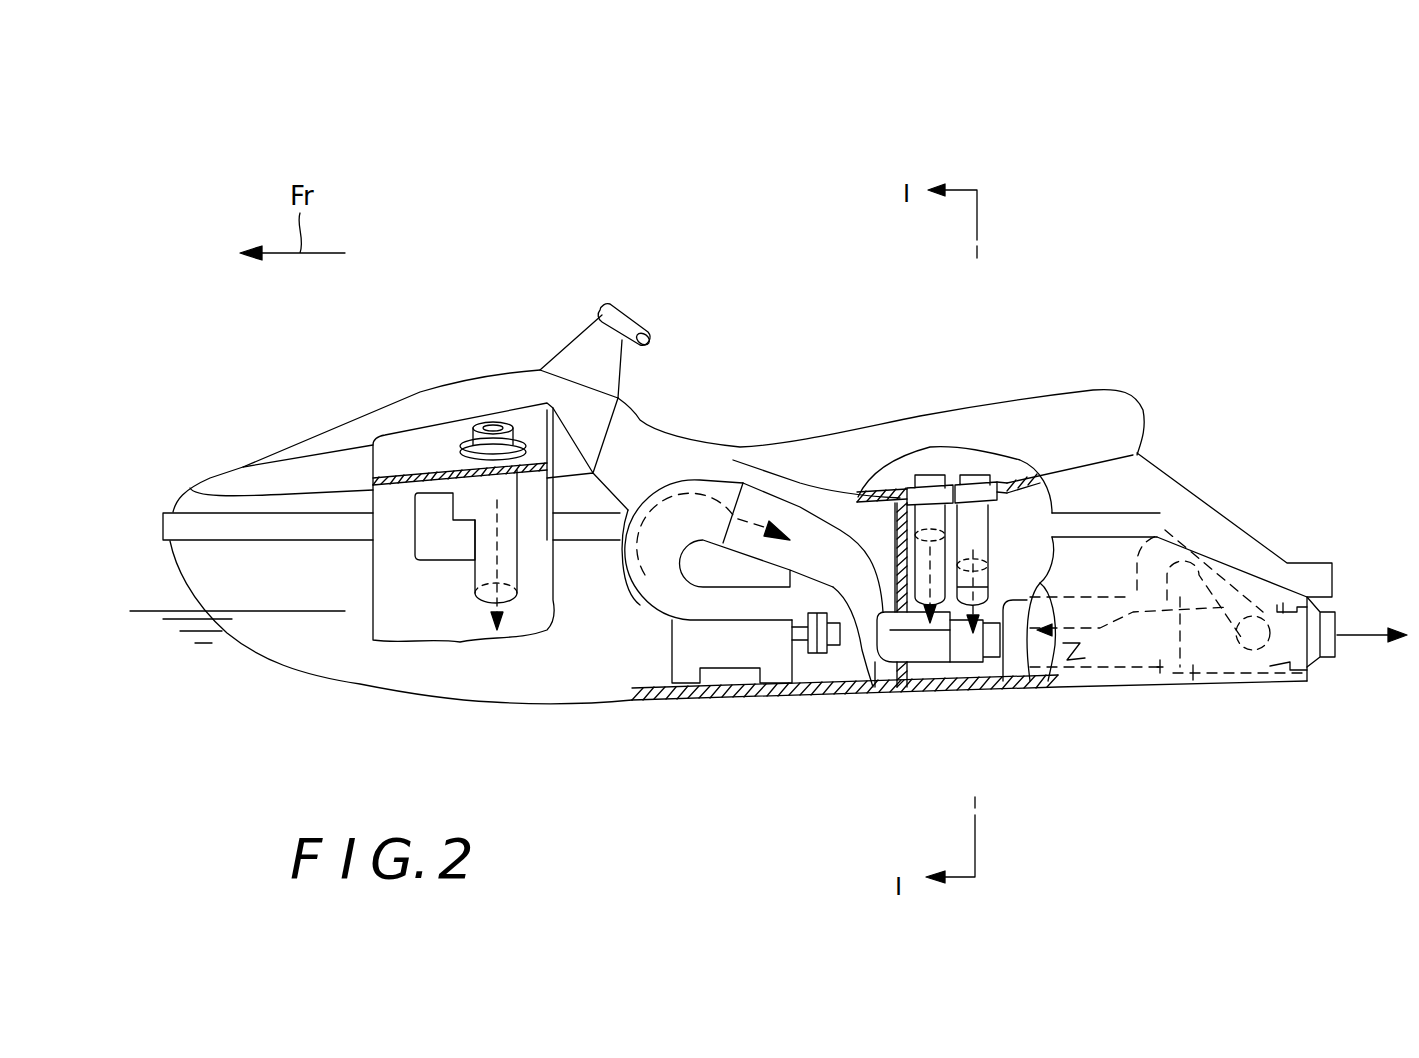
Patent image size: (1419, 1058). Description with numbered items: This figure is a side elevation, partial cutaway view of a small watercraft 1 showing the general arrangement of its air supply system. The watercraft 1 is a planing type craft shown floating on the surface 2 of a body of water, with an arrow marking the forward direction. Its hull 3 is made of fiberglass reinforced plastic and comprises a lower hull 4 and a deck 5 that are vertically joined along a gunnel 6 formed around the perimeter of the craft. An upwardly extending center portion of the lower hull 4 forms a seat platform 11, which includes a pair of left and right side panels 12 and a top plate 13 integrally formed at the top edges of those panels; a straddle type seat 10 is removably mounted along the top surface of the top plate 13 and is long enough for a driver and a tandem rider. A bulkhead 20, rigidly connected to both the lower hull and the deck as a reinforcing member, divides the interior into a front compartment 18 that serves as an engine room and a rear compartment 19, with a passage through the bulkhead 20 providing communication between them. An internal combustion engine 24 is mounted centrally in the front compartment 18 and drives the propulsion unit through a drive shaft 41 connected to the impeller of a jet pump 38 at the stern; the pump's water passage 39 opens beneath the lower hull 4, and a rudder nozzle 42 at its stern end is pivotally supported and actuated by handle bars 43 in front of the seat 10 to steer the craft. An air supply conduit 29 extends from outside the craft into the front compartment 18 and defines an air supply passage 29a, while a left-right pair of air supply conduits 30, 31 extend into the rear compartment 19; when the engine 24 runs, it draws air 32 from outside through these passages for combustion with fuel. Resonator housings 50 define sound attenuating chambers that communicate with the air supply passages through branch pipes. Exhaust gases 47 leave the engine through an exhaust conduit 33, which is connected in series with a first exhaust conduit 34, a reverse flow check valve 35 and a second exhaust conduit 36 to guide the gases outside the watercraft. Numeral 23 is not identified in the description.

The small watercraft 1 is at (1210, 320).
The surface of a body of water 2 is at (330, 620).
The hull 3 is at (1190, 422).
The lower hull 4 is at (548, 708).
The deck 5 is at (318, 500).
The gunnel 6 is at (257, 527).
The seat 10 is at (1125, 417).
The seat platform 11 is at (1013, 266).
The side panels 12 is at (1095, 492).
The top plate 13 is at (1010, 460).
The front compartment 18 is at (388, 603).
The rear compartment 19 is at (1037, 678).
The bulkhead 20 is at (877, 684).
The air intake duct 23 is at (676, 478).
The internal combustion engine 24 is at (727, 690).
The air supply conduit 29 is at (487, 420).
The air supply passage 29a is at (494, 424).
The air supply conduit 30 is at (975, 475).
The air supply conduit 31 is at (927, 475).
The air 32 is at (473, 615).
The exhaust conduit 33 is at (800, 498).
The first exhaust conduit 34 is at (648, 625).
The reverse flow check valve 35 is at (1000, 690).
The second exhaust conduit 36 is at (1257, 580).
The jet pump 38 is at (1276, 590).
The water passage 39 is at (1200, 647).
The drive shaft 41 is at (833, 655).
The rudder nozzle 42 is at (1323, 660).
The handle bars 43 is at (643, 325).
The exhaust gases 47 is at (720, 525).
The resonator housings 50 is at (450, 575).